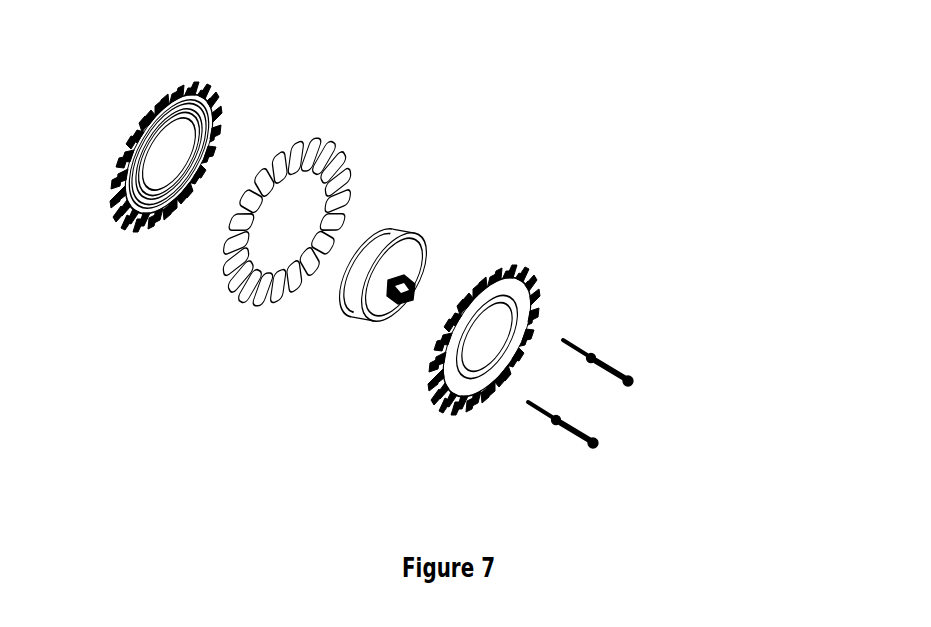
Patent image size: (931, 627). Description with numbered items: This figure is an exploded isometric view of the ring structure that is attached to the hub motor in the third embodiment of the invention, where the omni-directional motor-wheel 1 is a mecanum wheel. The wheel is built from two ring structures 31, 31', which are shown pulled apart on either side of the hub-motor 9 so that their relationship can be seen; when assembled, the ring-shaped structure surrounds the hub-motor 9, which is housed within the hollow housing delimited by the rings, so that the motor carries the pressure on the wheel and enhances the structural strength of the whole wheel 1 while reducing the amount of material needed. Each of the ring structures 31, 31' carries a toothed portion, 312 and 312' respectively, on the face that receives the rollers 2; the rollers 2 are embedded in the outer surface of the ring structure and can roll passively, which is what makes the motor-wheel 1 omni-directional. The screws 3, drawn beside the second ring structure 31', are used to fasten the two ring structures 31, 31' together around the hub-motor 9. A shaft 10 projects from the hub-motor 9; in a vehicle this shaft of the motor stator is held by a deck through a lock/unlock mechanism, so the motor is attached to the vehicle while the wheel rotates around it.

The omni-directional motor-wheel 1 is at (510, 178).
The rollers 2 is at (235, 288).
The screws 3 is at (618, 370).
The hub-motor 9 is at (405, 253).
The shaft 10 is at (399, 303).
The ring structure 31 is at (168, 147).
The teeth of first gear member 312 is at (207, 156).
The ring structure 31' is at (524, 334).
The teeth of second gear member 312' is at (486, 363).